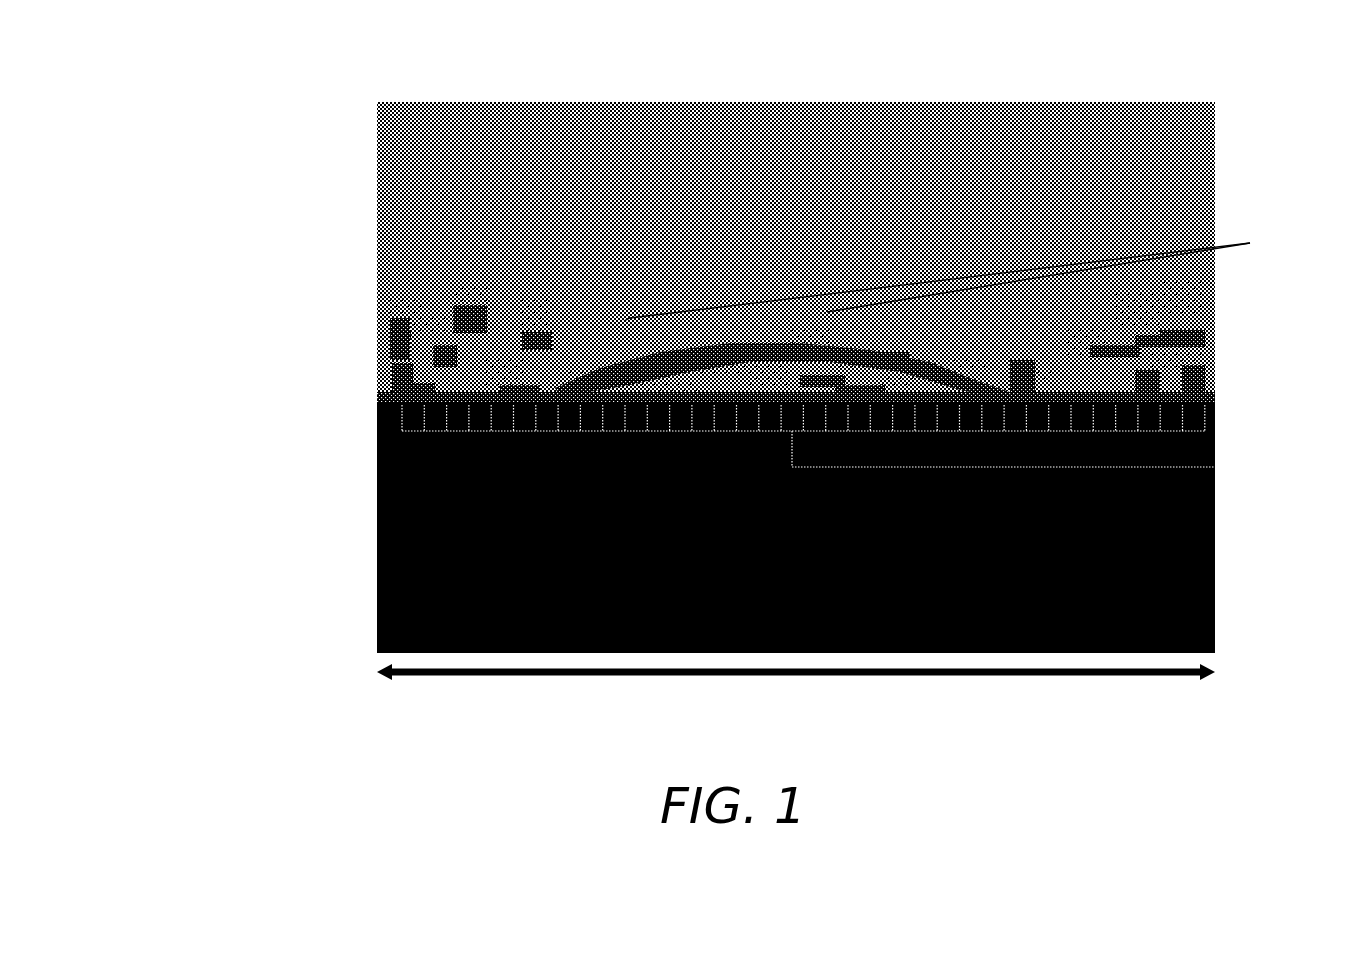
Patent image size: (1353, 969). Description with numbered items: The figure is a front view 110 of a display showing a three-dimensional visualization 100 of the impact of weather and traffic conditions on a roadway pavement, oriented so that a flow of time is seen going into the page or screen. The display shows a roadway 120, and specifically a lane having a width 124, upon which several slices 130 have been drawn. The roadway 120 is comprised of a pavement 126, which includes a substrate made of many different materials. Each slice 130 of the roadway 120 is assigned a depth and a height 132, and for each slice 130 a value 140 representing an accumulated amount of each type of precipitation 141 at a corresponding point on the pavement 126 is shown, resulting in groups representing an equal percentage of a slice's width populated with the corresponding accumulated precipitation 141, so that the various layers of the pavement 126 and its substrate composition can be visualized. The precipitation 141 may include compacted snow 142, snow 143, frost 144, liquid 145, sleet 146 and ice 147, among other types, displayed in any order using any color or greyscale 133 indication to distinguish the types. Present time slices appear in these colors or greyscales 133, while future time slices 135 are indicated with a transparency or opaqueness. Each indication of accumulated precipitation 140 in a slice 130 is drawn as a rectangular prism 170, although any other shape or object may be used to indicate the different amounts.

The three-dimensional visualization 100 is at (400, 707).
The front view 110 is at (428, 138).
The roadway 120 is at (377, 478).
The width 124 is at (745, 675).
The pavement 126 is at (413, 511).
The slice 130 is at (1215, 468).
The height 132 is at (555, 302).
The color or greyscale 133 is at (1197, 357).
The future time slices 135 is at (1158, 242).
The value representing accumulated precipitation 140 is at (652, 346).
The precipitation 141 is at (796, 341).
The compacted snow 142 is at (403, 300).
The snow 143 is at (403, 311).
The frost 144 is at (403, 336).
The liquid 145 is at (403, 357).
The sleet 146 is at (378, 368).
The ice 147 is at (378, 401).
The rectangular prism 170 is at (1203, 337).